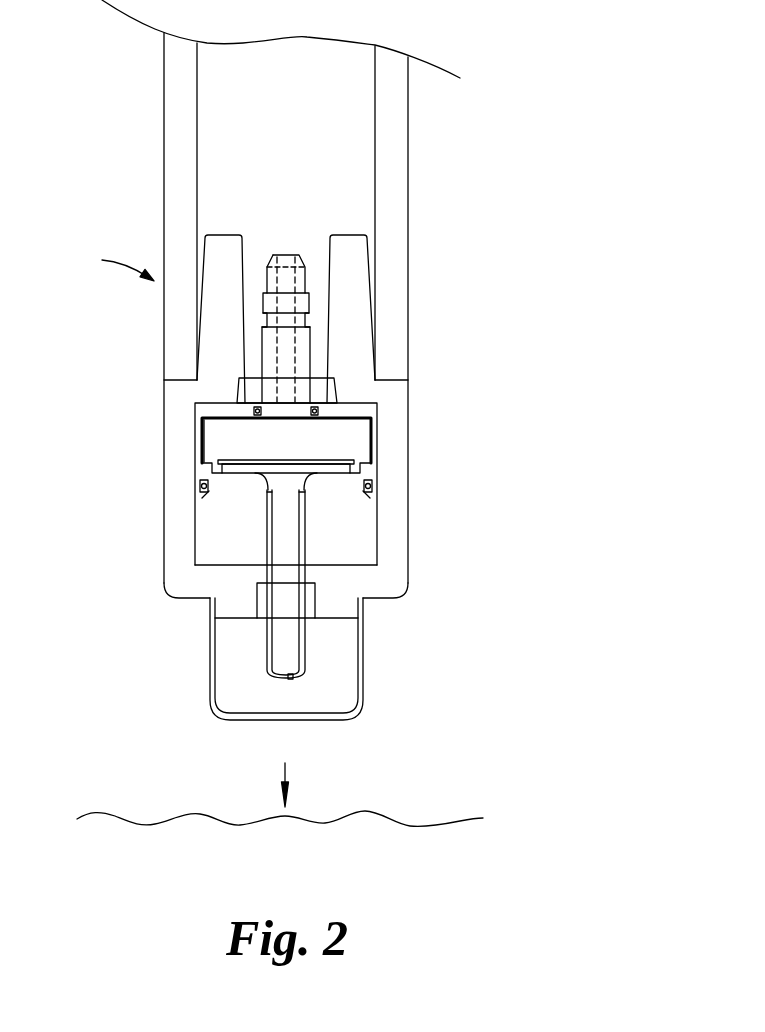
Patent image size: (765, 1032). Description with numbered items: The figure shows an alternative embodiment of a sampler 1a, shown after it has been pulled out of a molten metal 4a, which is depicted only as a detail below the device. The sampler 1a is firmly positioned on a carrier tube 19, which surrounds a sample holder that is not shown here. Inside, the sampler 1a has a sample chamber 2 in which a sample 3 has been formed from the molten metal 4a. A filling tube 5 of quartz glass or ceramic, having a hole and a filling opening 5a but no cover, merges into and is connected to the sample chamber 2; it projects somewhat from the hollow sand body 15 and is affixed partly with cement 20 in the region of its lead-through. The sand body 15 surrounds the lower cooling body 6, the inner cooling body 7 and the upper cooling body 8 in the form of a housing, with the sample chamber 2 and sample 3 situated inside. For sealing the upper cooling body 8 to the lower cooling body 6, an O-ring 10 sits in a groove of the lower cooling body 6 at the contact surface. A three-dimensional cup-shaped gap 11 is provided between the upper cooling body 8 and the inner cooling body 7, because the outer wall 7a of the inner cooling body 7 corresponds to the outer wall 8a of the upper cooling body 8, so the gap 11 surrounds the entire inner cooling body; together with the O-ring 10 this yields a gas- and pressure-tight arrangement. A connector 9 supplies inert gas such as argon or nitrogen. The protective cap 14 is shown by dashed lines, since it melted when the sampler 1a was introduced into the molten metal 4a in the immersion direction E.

The sampler 1a is at (107, 266).
The sample chamber 2 is at (258, 461).
The sample 3 is at (256, 470).
The molten metal 4a is at (280, 794).
The filling tube 5 is at (287, 640).
The filling opening 5a is at (293, 679).
The lower cooling body 6 is at (348, 522).
The inner cooling body 7 is at (347, 446).
The outer wall 7a is at (200, 443).
The upper cooling body 8 is at (357, 413).
The outer wall 8a is at (374, 405).
The connector 9 is at (287, 282).
The O-ring 10 is at (377, 484).
The gap 11 is at (373, 410).
The protective cap 14 is at (208, 707).
The sand body 15 is at (188, 587).
The carrier tube 19 is at (390, 118).
The cement 20 is at (310, 602).
The immersion direction E is at (285, 769).